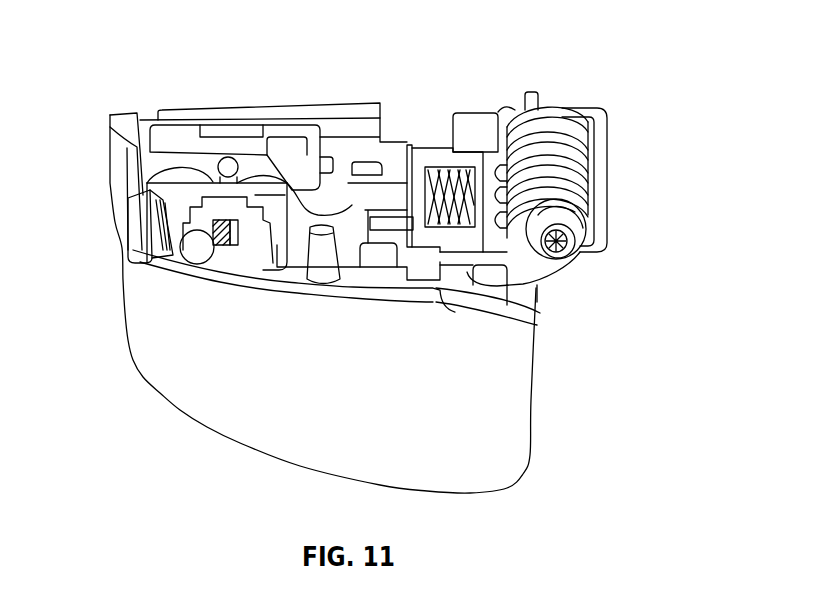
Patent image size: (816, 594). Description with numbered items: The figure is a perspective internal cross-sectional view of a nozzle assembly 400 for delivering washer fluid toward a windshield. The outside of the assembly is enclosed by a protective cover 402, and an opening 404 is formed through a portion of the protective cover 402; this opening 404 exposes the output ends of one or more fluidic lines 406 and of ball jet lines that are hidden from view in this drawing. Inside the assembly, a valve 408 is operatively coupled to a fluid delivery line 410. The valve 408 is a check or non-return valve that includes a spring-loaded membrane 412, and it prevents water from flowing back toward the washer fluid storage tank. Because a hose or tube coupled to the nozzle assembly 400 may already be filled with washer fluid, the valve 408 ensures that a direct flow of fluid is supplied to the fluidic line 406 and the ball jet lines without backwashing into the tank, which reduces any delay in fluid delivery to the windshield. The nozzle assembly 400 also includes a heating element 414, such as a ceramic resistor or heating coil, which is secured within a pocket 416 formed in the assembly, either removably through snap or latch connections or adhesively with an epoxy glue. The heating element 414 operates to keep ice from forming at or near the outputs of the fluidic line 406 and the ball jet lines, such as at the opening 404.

The nozzle assembly 400 is at (609, 80).
The protective cover 402 is at (533, 415).
The opening 404 is at (138, 155).
The fluidic line 406 is at (163, 133).
The valve 408 is at (410, 148).
The fluid delivery line 410 is at (373, 196).
The spring-loaded membrane 412 is at (452, 147).
The heating element 414 is at (212, 228).
The pocket 416 is at (248, 228).